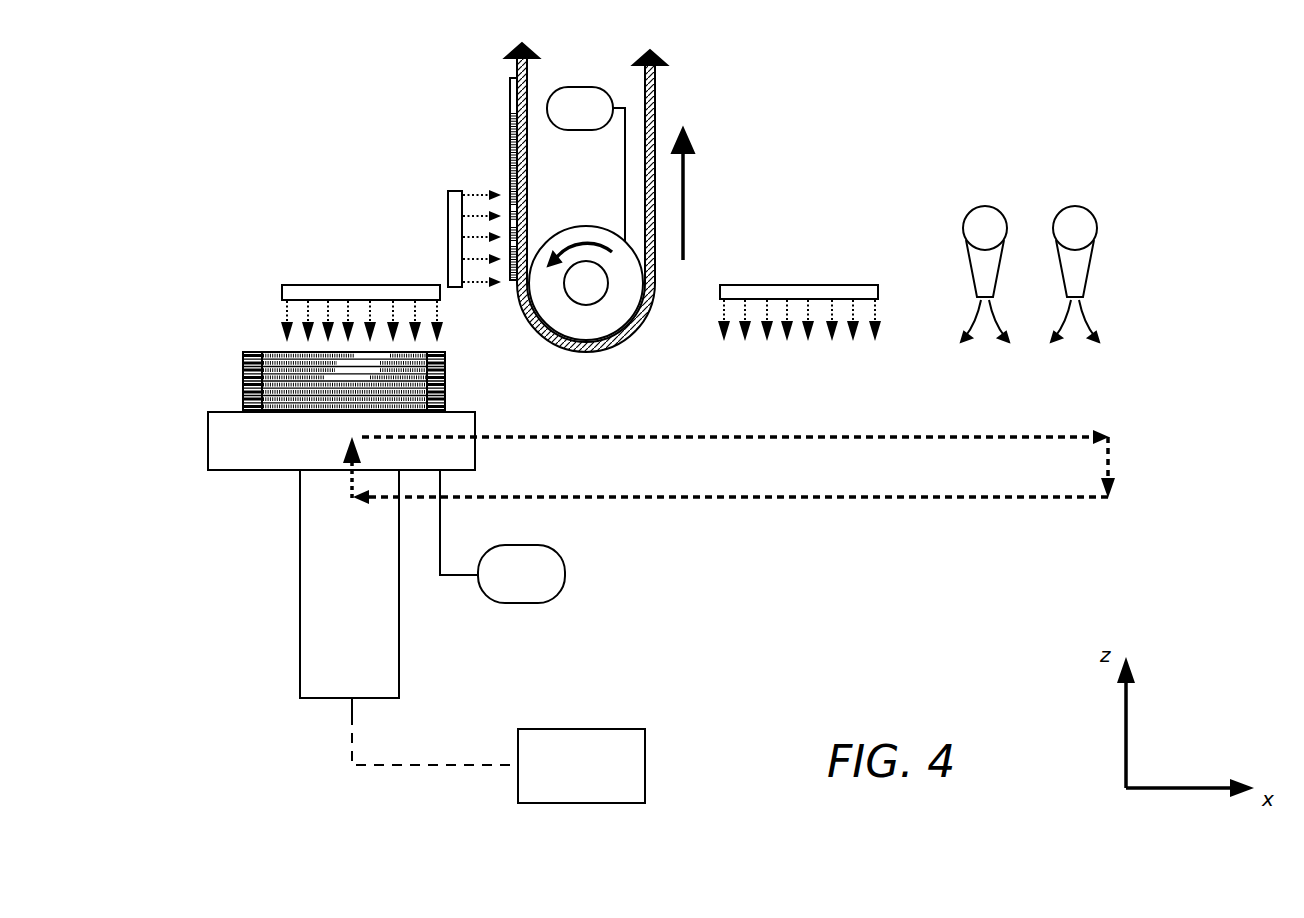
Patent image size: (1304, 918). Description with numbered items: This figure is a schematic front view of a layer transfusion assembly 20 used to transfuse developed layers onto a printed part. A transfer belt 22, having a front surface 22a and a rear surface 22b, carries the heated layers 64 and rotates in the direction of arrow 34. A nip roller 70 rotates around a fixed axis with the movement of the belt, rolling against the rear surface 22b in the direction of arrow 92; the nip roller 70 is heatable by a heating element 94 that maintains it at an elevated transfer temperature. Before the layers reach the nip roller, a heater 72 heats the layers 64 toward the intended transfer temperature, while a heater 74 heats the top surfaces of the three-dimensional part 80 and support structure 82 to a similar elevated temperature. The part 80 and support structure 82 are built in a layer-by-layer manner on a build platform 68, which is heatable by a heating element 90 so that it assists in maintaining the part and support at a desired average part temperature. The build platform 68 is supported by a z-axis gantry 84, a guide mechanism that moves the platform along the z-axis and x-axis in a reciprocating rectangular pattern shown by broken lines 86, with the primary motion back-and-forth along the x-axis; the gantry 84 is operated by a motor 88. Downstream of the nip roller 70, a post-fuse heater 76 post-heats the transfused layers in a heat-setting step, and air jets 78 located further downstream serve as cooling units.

The layer transfusion assembly 20 is at (1172, 524).
The transfer belt 22 is at (490, 72).
The front surface 22a is at (656, 100).
The rear surface 22b is at (531, 78).
The arrow 34 is at (684, 175).
The layers 64 is at (498, 147).
The build platform 68 is at (208, 445).
The nip roller 70 is at (542, 240).
The heater 72 is at (437, 200).
The heater 74 is at (316, 276).
The post-fuse heater 76 is at (793, 274).
The air jets 78 is at (985, 206).
The 3D part 80 is at (278, 352).
The support structure 82 is at (243, 380).
The z-axis gantry 84 is at (399, 633).
The broken lines 86 is at (850, 500).
The motor 88 is at (645, 755).
The heating element 90 is at (565, 562).
The arrow 92 is at (605, 243).
The heating element 94 is at (566, 87).